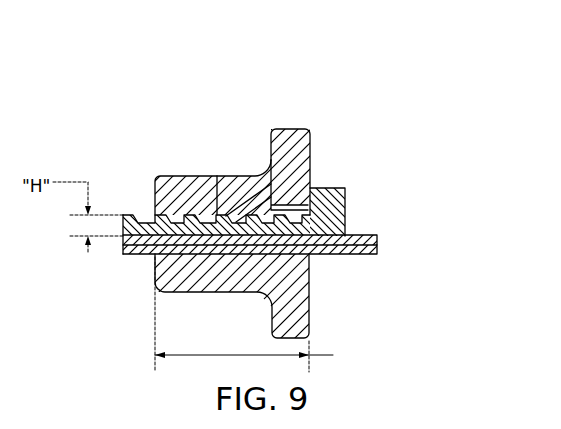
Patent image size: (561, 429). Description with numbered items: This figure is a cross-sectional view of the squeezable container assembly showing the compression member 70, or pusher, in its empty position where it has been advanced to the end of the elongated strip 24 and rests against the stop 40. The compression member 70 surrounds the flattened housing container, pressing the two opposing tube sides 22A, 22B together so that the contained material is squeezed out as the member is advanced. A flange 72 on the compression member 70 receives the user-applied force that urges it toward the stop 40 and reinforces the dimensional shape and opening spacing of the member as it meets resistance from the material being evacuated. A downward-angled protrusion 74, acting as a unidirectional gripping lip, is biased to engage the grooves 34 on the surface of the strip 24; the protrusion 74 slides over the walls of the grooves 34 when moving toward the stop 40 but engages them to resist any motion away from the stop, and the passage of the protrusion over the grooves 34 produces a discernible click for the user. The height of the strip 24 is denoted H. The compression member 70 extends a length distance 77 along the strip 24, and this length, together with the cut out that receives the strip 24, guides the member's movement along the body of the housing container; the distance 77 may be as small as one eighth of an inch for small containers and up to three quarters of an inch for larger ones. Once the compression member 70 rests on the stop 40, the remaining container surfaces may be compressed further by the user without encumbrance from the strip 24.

The compression member 70 is at (149, 178).
The flange 72 is at (296, 152).
The downward-angled protrusion 74 is at (257, 175).
The elongated strip 24 is at (207, 228).
The stop 40 is at (323, 203).
The flattened tube side 22A is at (355, 235).
The flattened tube side 22B is at (328, 253).
The grooves 34 is at (133, 239).
The length distance 77 is at (260, 314).